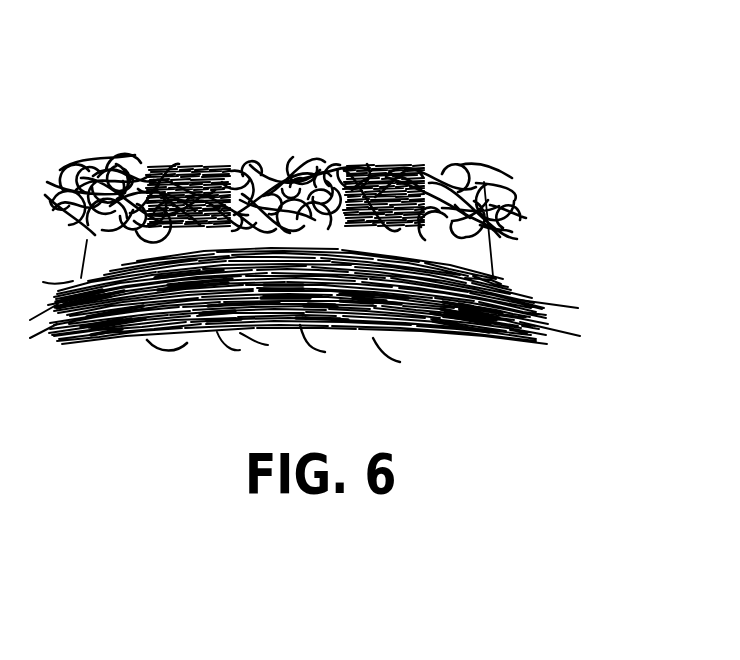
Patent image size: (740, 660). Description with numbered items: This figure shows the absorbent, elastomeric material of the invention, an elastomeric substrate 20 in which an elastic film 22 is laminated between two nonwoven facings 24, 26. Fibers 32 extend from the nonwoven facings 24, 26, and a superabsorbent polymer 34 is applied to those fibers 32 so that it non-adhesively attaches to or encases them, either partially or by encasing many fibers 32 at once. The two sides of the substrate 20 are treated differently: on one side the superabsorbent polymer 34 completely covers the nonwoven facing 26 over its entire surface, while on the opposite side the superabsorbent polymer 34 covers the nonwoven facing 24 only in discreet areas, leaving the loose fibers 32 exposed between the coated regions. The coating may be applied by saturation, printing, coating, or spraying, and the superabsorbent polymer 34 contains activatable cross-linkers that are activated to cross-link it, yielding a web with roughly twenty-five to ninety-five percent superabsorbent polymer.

The elastomeric substrate 20 is at (323, 132).
The elastic film 22 is at (483, 256).
The nonwoven facing 24 is at (518, 202).
The nonwoven facing 26 is at (566, 324).
The fibers 32 is at (278, 157).
The superabsorbent polymer 34 is at (192, 158).